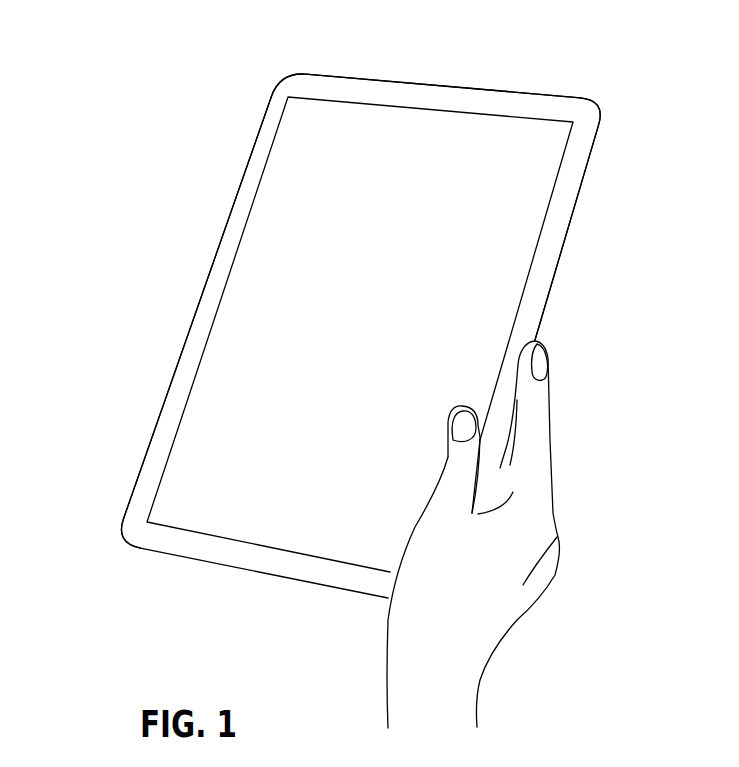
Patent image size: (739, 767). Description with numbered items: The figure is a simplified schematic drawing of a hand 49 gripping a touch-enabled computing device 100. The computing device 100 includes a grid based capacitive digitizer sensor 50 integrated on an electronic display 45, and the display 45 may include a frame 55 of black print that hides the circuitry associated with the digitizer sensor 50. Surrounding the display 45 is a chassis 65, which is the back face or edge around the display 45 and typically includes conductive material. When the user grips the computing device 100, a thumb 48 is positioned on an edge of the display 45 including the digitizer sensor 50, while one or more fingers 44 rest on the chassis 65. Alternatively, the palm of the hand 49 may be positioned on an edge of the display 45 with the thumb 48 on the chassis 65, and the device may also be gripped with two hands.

The touch-enabled computing device 100 is at (210, 112).
The chassis 65 is at (562, 250).
The frame 55 is at (247, 203).
The grid based capacitive digitizer sensor 50 is at (267, 312).
The electronic display 45 is at (177, 425).
The thumb 48 is at (460, 462).
The hand 49 is at (462, 572).
The fingers 44 is at (500, 473).